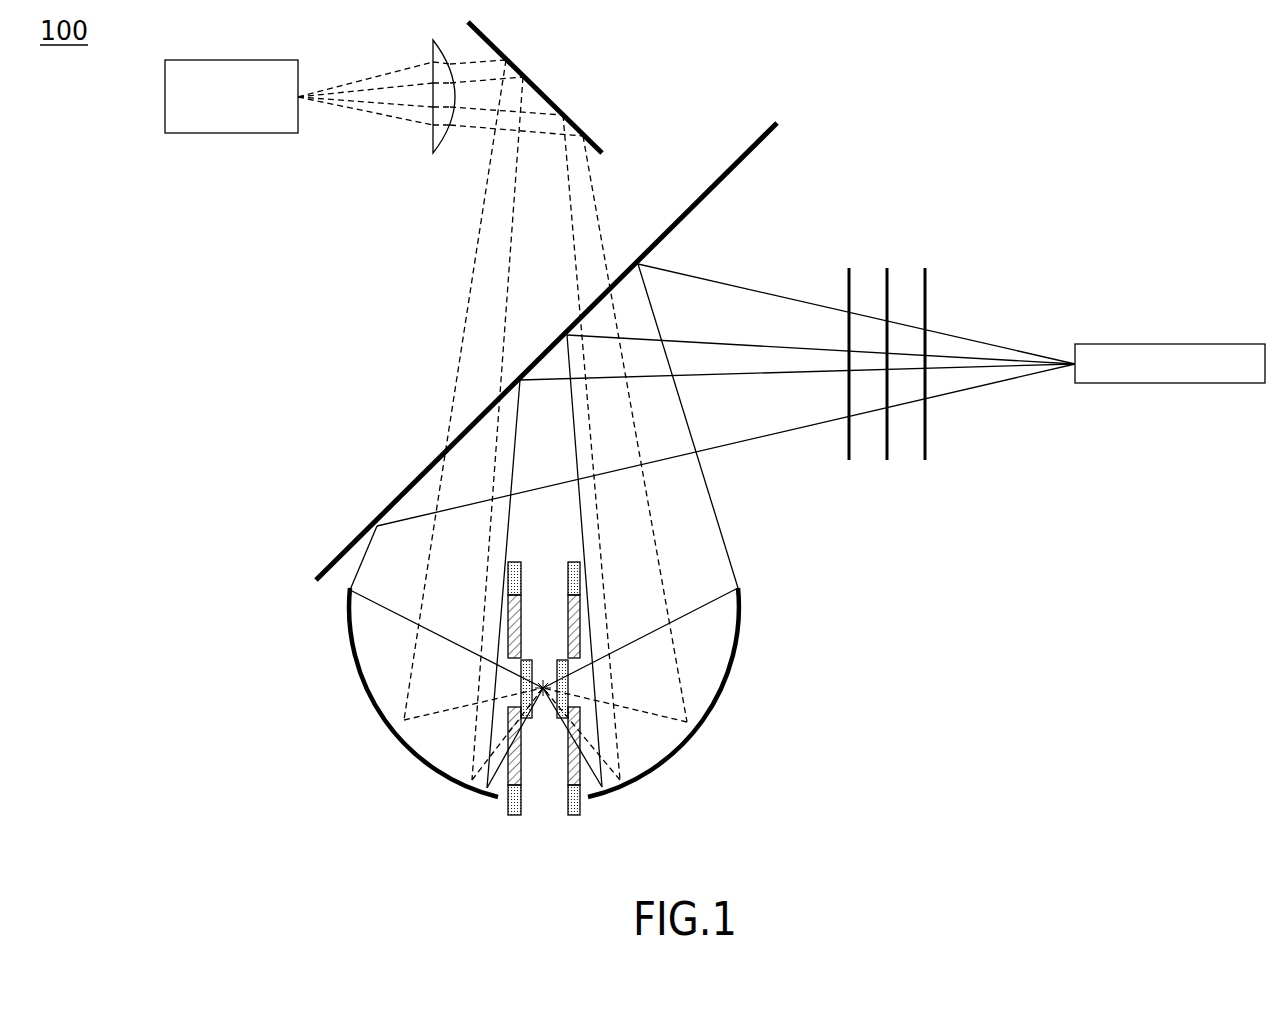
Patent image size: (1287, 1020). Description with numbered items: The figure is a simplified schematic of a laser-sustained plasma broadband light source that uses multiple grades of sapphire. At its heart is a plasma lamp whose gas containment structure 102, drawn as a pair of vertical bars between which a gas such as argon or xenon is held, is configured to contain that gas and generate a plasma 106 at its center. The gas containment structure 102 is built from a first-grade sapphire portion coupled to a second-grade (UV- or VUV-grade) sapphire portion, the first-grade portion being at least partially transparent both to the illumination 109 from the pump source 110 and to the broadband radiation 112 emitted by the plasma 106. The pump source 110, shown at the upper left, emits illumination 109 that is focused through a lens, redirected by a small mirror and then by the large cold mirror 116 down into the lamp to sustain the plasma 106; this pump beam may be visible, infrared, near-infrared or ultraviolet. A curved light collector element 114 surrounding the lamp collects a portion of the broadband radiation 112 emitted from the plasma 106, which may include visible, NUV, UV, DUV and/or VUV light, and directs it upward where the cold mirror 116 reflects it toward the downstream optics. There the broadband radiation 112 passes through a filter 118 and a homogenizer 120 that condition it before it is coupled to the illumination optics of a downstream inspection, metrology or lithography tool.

The gas containment structure 102 is at (499, 605).
The plasma 106 is at (548, 688).
The illumination 109 is at (492, 223).
The pump source 110 is at (250, 114).
The broadband radiation 112 is at (735, 288).
The light collector element 114 is at (367, 680).
The cold mirror 116 is at (728, 169).
The filter 118 is at (928, 432).
The homogenizer 120 is at (1170, 350).